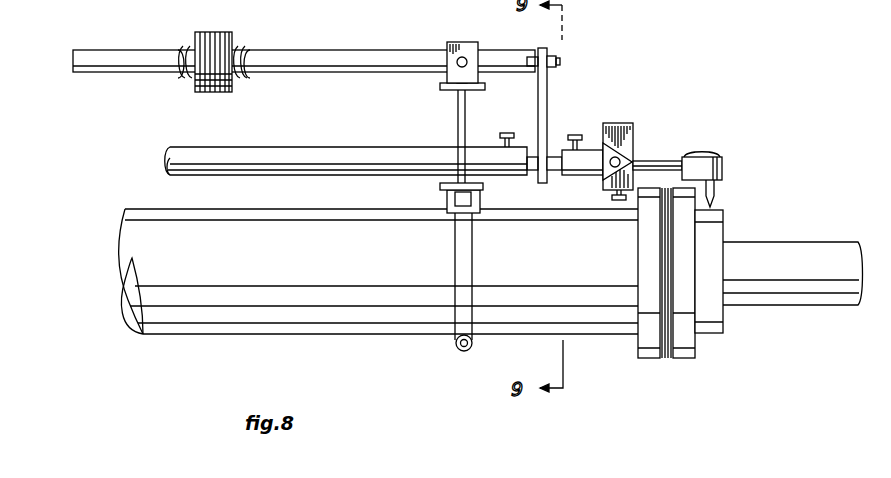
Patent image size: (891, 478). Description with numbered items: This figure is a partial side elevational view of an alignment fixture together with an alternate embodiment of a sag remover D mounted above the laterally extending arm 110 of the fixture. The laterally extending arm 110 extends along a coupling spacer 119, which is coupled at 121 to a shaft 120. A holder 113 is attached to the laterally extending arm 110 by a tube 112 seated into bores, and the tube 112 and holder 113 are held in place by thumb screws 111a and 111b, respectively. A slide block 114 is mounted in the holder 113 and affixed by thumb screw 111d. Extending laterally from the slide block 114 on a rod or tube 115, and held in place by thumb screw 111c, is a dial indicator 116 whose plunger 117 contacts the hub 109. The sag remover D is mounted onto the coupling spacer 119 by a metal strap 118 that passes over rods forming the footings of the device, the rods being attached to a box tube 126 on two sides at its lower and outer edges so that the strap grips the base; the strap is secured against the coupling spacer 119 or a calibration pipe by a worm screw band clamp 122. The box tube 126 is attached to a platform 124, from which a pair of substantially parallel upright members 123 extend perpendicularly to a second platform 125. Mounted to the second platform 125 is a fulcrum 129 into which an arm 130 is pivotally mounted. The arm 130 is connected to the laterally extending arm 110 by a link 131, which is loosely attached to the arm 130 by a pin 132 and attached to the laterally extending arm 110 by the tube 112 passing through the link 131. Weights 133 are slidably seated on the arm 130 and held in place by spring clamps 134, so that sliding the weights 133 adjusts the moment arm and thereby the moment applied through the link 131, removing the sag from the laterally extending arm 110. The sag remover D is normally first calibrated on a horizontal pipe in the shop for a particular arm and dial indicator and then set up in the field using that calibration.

The hub 109 is at (726, 226).
The laterally extending arm 110 is at (318, 147).
The thumb screw 111a is at (508, 133).
The thumb screw 111b is at (574, 135).
The thumb screw 111c is at (612, 197).
The thumb screw 111d is at (636, 156).
The tube 112 is at (537, 171).
The holder 113 is at (598, 150).
The slide block 114 is at (628, 124).
The rod or tube 115 is at (666, 154).
The dial indicator 116 is at (726, 160).
The plunger 117 is at (714, 190).
The metal strap 118 is at (450, 320).
The coupling spacer 119 is at (243, 328).
The shaft 120 is at (768, 307).
The coupling 121 is at (666, 360).
The worm screw band clamp 122 is at (472, 345).
The upright members 123 is at (457, 118).
The platform 124 is at (440, 186).
The second platform 125 is at (440, 87).
The box tube 126 is at (447, 200).
The fulcrum 129 is at (447, 46).
The arm 130 is at (362, 72).
The link 131 is at (549, 96).
The pin 132 is at (562, 62).
The weights 133 is at (216, 92).
The spring clamps 134 is at (186, 74).
The sag remover D is at (304, 50).